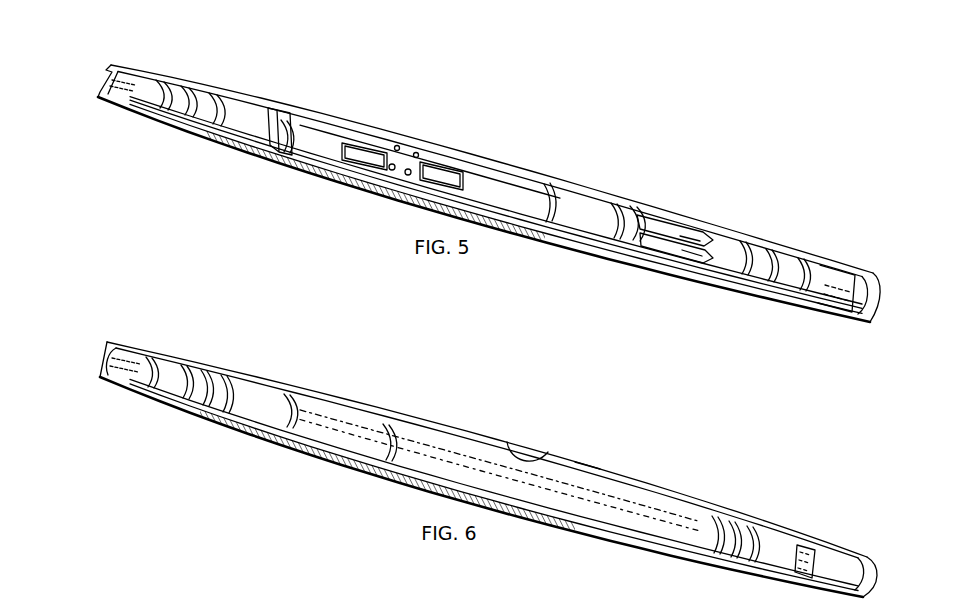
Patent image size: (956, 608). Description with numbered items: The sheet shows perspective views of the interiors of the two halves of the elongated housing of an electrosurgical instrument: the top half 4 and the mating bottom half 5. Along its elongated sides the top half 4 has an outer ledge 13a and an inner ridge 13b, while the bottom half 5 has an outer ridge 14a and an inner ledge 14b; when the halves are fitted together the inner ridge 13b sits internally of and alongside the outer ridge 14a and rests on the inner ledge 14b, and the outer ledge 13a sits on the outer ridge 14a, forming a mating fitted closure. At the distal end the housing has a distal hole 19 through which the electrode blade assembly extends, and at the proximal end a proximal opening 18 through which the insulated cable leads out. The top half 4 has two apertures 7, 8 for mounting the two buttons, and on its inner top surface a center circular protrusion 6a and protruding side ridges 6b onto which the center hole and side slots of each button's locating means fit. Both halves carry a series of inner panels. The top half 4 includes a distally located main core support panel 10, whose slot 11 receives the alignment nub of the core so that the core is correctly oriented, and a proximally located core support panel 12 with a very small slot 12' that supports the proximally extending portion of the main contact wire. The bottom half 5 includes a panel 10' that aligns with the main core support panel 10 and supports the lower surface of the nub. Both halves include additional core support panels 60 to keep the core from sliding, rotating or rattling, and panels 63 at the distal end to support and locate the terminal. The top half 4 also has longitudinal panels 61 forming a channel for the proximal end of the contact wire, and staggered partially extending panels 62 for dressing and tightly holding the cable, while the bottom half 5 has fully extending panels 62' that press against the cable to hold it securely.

In FIG. 5, the top half 4 is at (347, 83).
In FIG. 6, the bottom half 5 is at (446, 412).
In FIG. 5, the center circular protrusion 6a is at (418, 152).
In FIG. 5, the protruding side ridges 6b is at (400, 148).
In FIG. 5, the aperture 7 is at (357, 152).
In FIG. 5, the aperture 8 is at (445, 178).
In FIG. 5, the main core support panel 10 is at (484, 209).
In FIG. 6, the panel 10' is at (481, 468).
In FIG. 5, the slot 11 is at (282, 114).
In FIG. 5, the core support panel 12 is at (717, 313).
In FIG. 5, the slot 12' is at (677, 190).
In FIG. 5, the outer ledge 13a is at (541, 240).
In FIG. 5, the inner ridge 13b is at (575, 238).
In FIG. 6, the outer ridge 14a is at (588, 468).
In FIG. 6, the inner ledge 14b is at (525, 460).
In FIG. 5, the proximal opening 18 is at (883, 295).
In FIG. 6, the proximal opening 18 is at (872, 573).
In FIG. 5, the distal hole 19 is at (117, 88).
In FIG. 6, the distal hole 19 is at (108, 367).
In FIG. 5, the core support panels 60 is at (282, 180).
In FIG. 5, the longitudinal panels 61 is at (657, 222).
In FIG. 5, the staggered partially extending panels 62 is at (789, 235).
In FIG. 6, the fully extending panels 62' is at (764, 499).
In FIG. 5, the panels 63 is at (222, 135).
In FIG. 6, the panels 63 is at (208, 372).